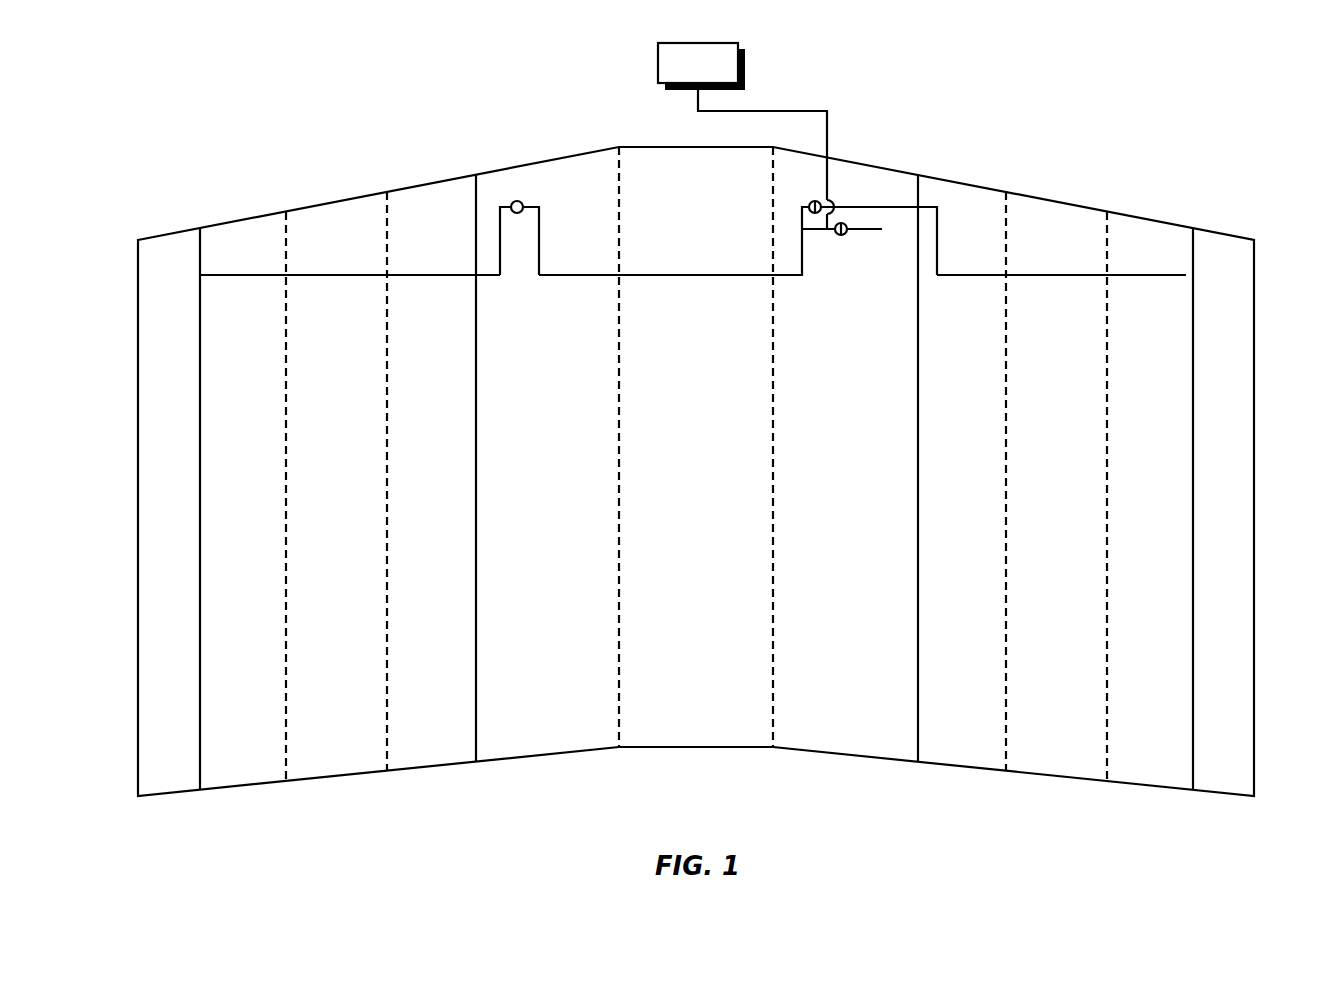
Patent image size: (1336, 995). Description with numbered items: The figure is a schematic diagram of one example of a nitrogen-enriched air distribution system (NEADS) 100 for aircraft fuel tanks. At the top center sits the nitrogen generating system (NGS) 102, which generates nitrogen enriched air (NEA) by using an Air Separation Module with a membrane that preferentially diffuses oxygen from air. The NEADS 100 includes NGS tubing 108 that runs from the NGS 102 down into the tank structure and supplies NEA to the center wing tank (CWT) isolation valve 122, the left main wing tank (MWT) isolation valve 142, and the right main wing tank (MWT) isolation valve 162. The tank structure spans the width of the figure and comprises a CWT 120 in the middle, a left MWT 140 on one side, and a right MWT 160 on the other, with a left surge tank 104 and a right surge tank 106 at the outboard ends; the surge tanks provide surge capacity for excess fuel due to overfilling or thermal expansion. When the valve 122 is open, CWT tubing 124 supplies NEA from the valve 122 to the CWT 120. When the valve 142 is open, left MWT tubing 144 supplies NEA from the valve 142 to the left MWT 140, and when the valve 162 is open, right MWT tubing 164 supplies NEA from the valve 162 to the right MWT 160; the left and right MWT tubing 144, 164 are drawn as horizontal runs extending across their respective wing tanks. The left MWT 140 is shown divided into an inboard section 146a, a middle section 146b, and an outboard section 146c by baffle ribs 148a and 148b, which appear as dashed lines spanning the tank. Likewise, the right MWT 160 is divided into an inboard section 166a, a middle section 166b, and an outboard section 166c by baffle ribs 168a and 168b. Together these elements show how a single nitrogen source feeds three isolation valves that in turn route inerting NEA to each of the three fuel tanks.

The nitrogen-enriched air distribution system (NEADS) 100 is at (240, 58).
The nitrogen generating system (NGS) 102 is at (657, 63).
The left surge tank 104 is at (169, 254).
The right surge tank 106 is at (1225, 255).
The NGS tubing 108 is at (805, 110).
The center wing tank (CWT) 120 is at (666, 136).
The center wing tank (CWT) isolation valve 122 is at (845, 237).
The CWT tubing 124 is at (863, 233).
The left main wing tank (MWT) 140 is at (340, 184).
The left main wing tank (MWT) isolation valve 142 is at (517, 200).
The left MWT tubing 144 is at (308, 273).
The inboard section 146a is at (442, 178).
The middle section 146b is at (318, 202).
The outboard section 146c is at (245, 217).
The baffle rib 148a is at (387, 364).
The baffle rib 148b is at (286, 364).
The right main wing tank (MWT) 160 is at (1050, 172).
The right main wing tank (MWT) isolation valve 162 is at (810, 202).
The right MWT tubing 164 is at (1033, 273).
The inboard section 166a is at (950, 178).
The middle section 166b is at (1083, 205).
The outboard section 166c is at (1147, 217).
The baffle rib 168a is at (1006, 364).
The baffle rib 168b is at (1107, 364).